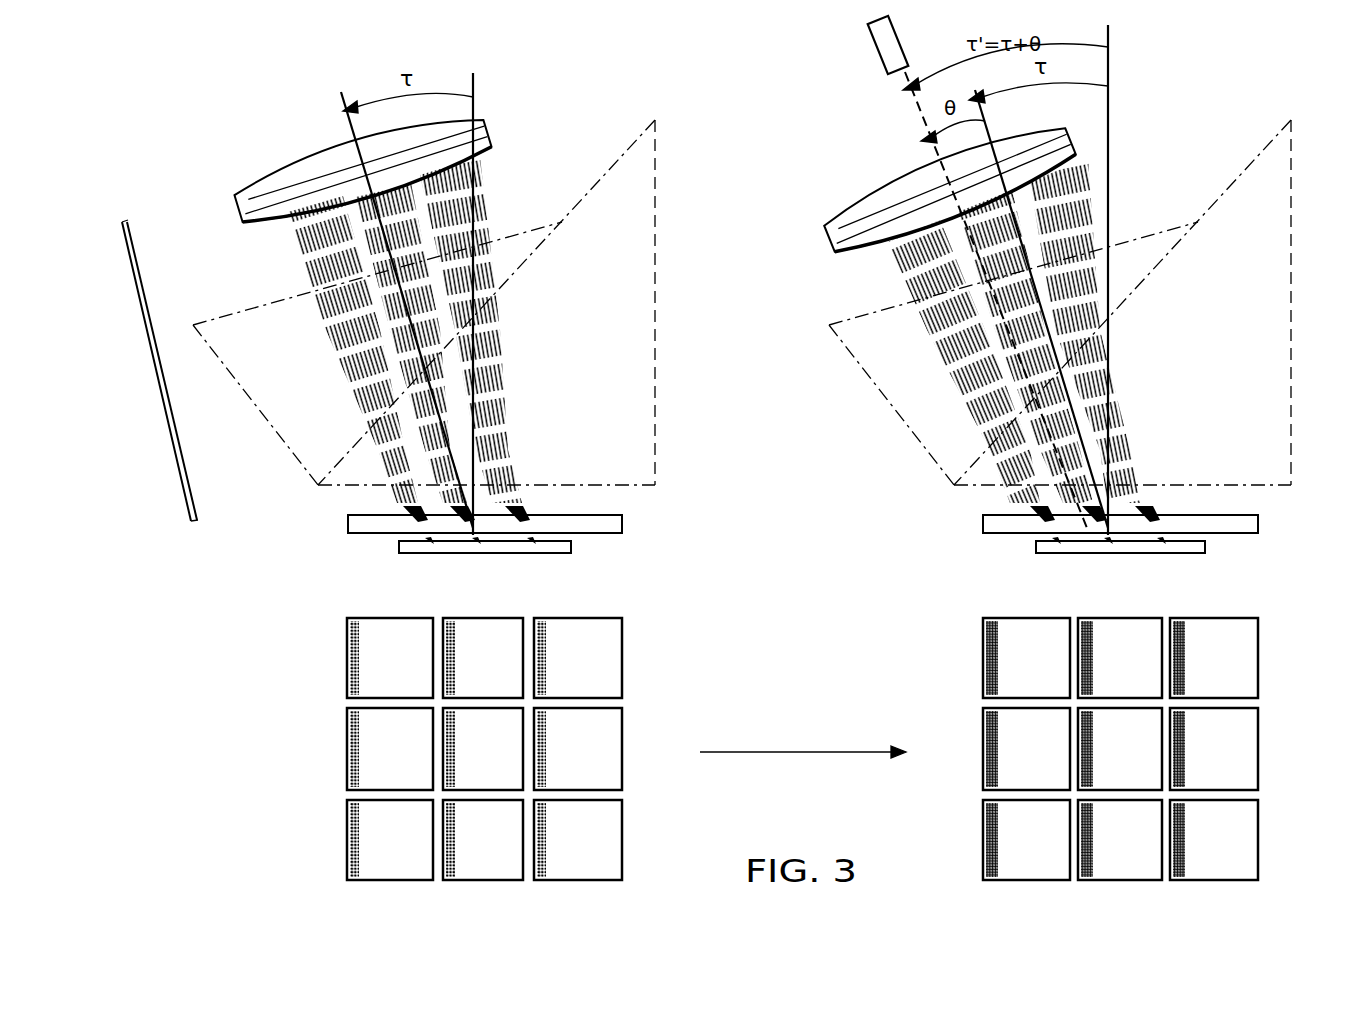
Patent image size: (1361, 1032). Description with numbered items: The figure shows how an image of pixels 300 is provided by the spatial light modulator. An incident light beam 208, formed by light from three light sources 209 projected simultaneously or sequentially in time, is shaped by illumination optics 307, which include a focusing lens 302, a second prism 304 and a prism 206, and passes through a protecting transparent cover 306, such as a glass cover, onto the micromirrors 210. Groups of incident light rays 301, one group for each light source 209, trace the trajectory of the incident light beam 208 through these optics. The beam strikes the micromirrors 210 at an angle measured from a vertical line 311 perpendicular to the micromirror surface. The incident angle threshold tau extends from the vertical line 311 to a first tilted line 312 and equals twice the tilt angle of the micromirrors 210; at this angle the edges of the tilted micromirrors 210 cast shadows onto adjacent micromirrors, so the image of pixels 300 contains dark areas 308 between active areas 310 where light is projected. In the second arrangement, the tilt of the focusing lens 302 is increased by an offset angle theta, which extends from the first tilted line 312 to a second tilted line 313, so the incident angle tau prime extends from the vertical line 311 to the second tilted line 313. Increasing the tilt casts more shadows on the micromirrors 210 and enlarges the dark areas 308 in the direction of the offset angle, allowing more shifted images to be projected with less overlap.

The prism 206 is at (655, 310).
The incident light beam 208 is at (471, 207).
The light sources 209 is at (874, 44).
The micromirrors 210 is at (457, 554).
The image of pixels 300 is at (250, 819).
The incident light rays 301 is at (342, 349).
The focusing lens 302 is at (236, 211).
The second prism 304 is at (258, 411).
The protecting transparent cover 306 is at (373, 534).
The illumination optics 307 is at (162, 379).
The dark areas 308 is at (356, 748).
The active areas 310 is at (483, 870).
The vertical line 311 is at (473, 86).
The first tilted line 312 is at (340, 104).
The second tilted line 313 is at (918, 114).